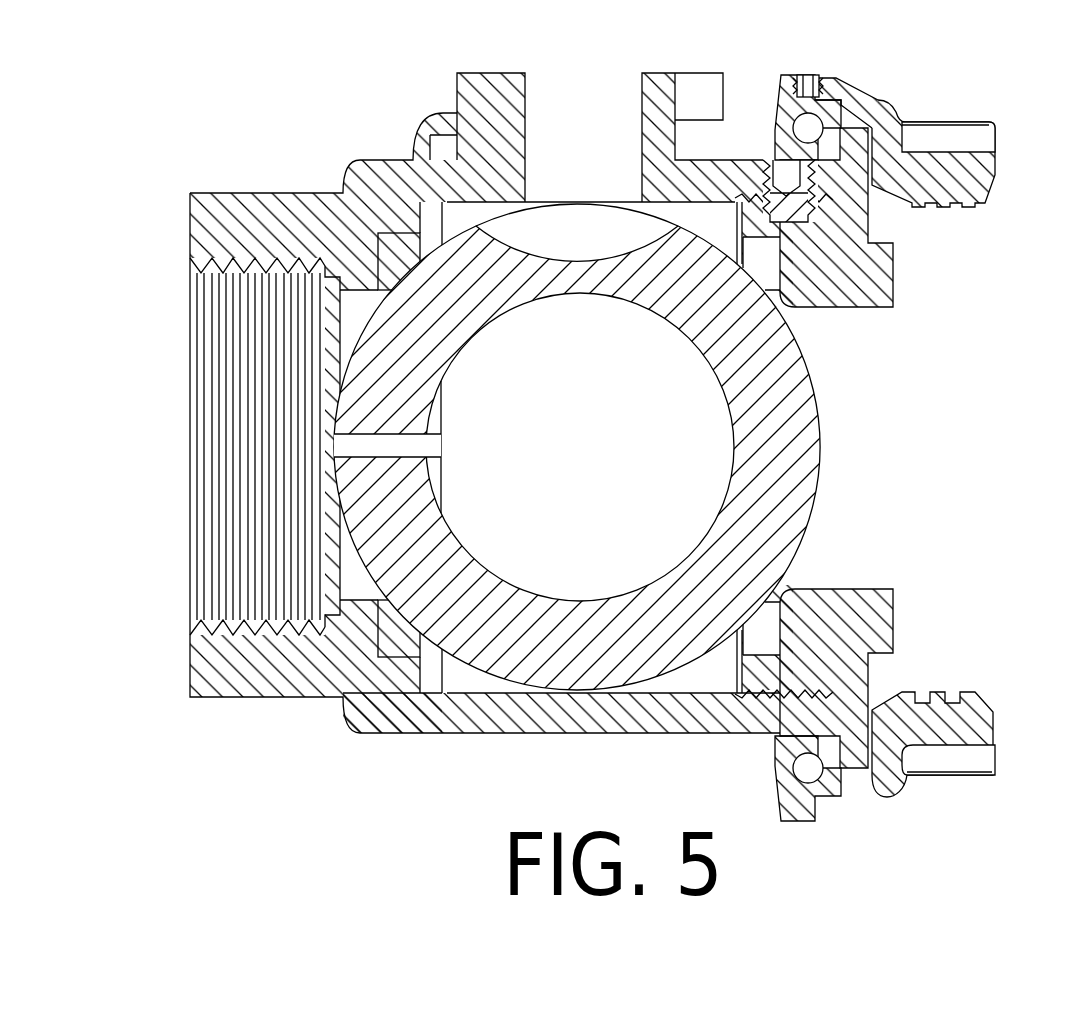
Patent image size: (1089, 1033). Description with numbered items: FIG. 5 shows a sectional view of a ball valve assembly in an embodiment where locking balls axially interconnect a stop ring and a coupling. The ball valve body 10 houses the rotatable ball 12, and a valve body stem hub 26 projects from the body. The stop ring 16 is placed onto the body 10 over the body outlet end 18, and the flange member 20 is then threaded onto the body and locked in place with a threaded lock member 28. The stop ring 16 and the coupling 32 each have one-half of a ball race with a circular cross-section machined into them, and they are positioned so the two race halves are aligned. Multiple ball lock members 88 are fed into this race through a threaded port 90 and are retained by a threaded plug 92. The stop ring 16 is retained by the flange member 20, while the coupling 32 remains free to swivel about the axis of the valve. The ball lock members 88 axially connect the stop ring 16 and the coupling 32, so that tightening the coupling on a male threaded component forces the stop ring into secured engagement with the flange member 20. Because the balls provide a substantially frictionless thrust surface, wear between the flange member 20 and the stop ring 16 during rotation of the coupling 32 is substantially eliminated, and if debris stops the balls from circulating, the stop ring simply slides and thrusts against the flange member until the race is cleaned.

The ball valve body 10 is at (380, 190).
The ball 12 is at (571, 658).
The stop ring 16 is at (792, 147).
The body outlet end 18 is at (710, 722).
The flange member 20 is at (868, 287).
The valve body stem hub 26 is at (650, 105).
The threaded lock member 28 is at (797, 215).
The coupling 32 is at (970, 170).
The ball lock members 88 is at (812, 128).
The threaded port 90 is at (825, 97).
The threaded plug 92 is at (812, 92).